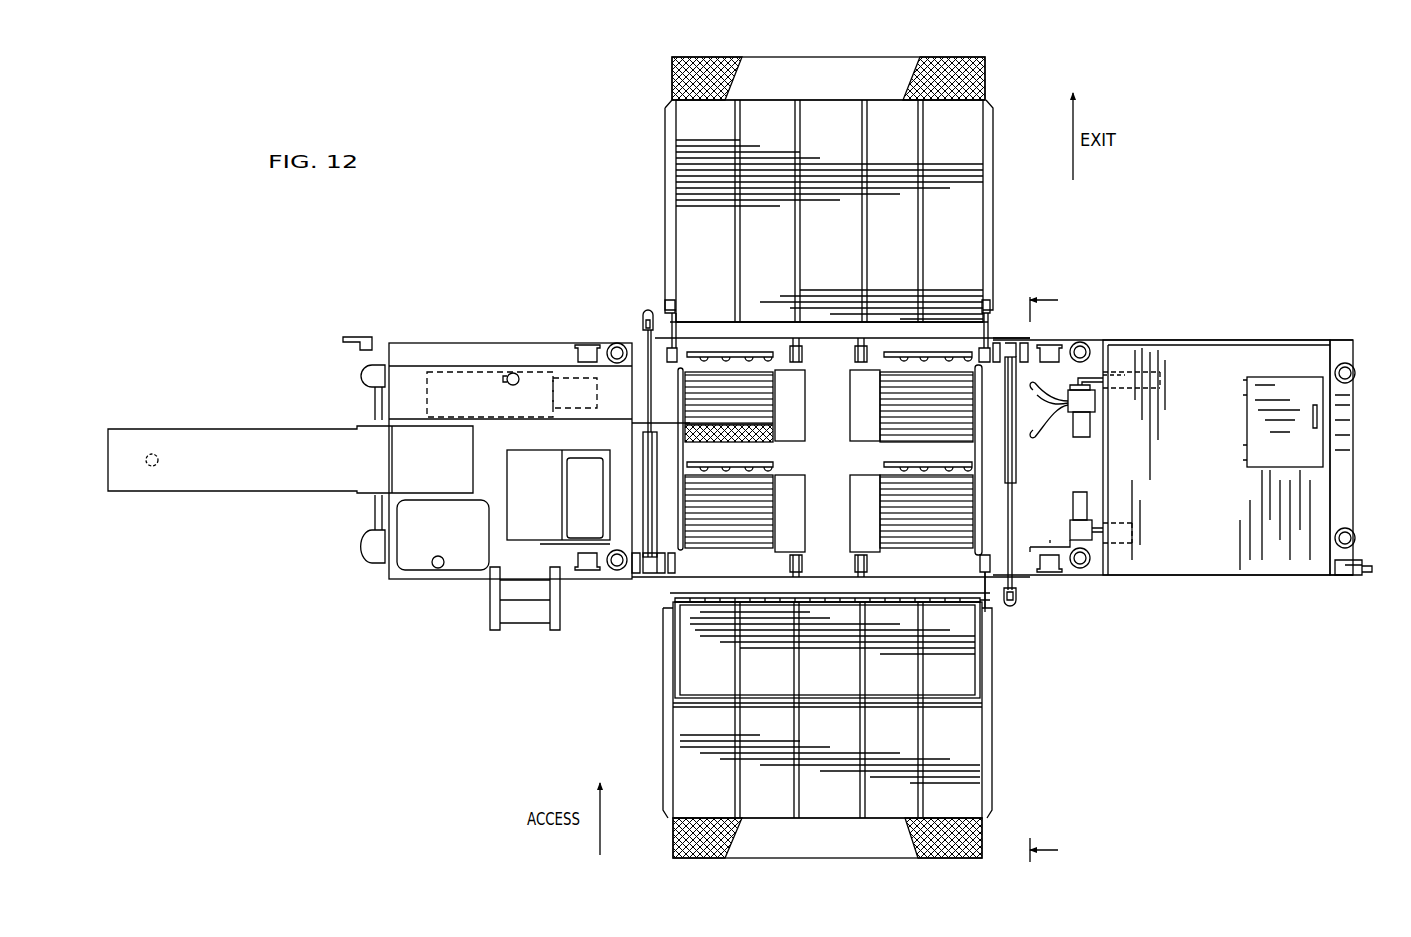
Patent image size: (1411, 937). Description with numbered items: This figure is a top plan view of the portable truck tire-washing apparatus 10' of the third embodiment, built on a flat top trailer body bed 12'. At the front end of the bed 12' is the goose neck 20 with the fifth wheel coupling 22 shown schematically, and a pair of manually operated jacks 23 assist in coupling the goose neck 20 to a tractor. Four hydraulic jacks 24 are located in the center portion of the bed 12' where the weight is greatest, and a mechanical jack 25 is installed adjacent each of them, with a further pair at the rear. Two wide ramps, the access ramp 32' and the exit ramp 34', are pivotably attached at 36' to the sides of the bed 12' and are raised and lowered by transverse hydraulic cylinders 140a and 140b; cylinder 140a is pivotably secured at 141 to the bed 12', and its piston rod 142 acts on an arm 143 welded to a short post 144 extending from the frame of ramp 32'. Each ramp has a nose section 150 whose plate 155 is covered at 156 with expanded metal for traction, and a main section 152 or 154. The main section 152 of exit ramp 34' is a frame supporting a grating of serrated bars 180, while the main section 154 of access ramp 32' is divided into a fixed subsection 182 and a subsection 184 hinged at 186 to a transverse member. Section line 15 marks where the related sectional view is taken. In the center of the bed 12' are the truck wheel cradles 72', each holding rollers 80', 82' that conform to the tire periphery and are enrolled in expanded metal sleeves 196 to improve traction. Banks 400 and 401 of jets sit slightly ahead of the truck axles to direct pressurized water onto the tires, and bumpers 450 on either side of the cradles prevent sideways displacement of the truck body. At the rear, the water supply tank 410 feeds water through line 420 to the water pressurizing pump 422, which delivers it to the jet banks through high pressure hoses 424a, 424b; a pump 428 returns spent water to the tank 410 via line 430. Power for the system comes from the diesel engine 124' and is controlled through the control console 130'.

The truck tire-washing apparatus 10' is at (1180, 197).
The flat top trailer body bed 12' is at (1182, 436).
The section line (FIG. 15) 15 is at (1058, 576).
The goose neck 20 is at (293, 428).
The fifth wheel coupling 22 is at (152, 454).
The manually operated jacks 23 is at (363, 375).
The hydraulic jacks 24 is at (588, 345).
The mechanical jack 25 is at (618, 343).
The access ramp 32' is at (865, 710).
The exit ramp 34' is at (859, 211).
The pivot 36' is at (826, 460).
The truck wheel cradles 72' is at (813, 464).
The rollers 80' is at (827, 405).
The driven rollers 82' is at (827, 474).
The diesel engine 124' is at (510, 467).
The control console 130' is at (558, 497).
The hydraulic cylinder 140a is at (1016, 472).
The hydraulic cylinder 140b is at (643, 455).
The pivot 141 is at (1008, 345).
The piston rod 142 is at (1013, 518).
The arm 143 is at (1016, 600).
The short post 144 is at (987, 608).
The nose section 150 is at (665, 846).
The main section of exit ramp 152 is at (665, 176).
The main section of access ramp 154 is at (660, 751).
The plate 155 is at (822, 68).
The non-flattened expanded metal covering 156 is at (960, 62).
The bars 180 is at (933, 302).
The fixed subsection 182 is at (980, 791).
The pivotable subsection 184 is at (983, 686).
The hinge 186 is at (826, 602).
The cylindrical sleeves of expanded metal 196 is at (636, 423).
The bank of jets 400 is at (868, 430).
The bank of jets 401 is at (895, 337).
The water supply tank 410 is at (1244, 352).
The line 420 is at (1160, 388).
The water pressurizing pump 422 is at (1096, 403).
The high pressure hose 424a is at (1054, 419).
The high pressure hose 424b is at (1040, 382).
The pump 428 is at (1088, 516).
The line 430 is at (1133, 540).
The bumpers 450 is at (686, 366).